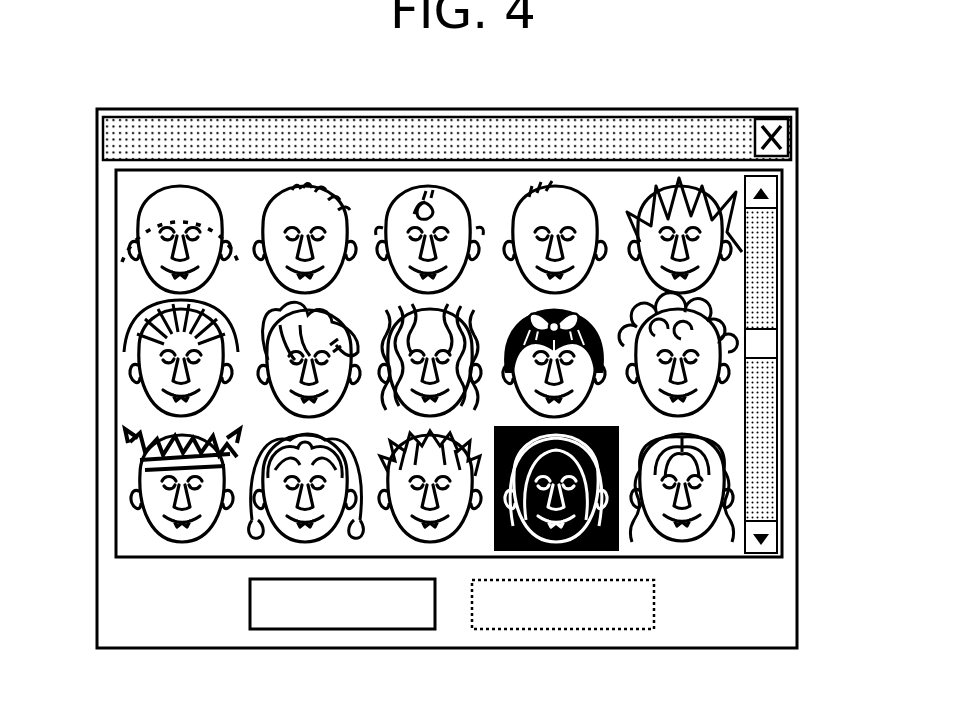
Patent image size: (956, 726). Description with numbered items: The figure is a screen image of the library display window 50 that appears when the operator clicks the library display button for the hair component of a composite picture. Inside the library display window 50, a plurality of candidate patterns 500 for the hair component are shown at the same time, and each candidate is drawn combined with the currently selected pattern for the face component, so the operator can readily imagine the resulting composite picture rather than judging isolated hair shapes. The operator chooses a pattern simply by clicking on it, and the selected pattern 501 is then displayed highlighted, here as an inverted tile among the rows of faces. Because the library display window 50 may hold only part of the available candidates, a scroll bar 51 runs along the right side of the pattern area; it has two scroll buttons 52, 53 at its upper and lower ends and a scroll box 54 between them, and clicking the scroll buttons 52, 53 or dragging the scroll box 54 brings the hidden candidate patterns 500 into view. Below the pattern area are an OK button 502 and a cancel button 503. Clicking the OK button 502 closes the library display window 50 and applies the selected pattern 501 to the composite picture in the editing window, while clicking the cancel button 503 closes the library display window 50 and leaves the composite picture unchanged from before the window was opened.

The library display window 50 is at (103, 440).
The candidate patterns 500 is at (372, 200).
The selected pattern 501 is at (504, 521).
The OK button 502 is at (277, 621).
The cancel button 503 is at (614, 629).
The scroll bar 51 is at (765, 298).
The scroll button 52 is at (775, 201).
The scroll button 53 is at (770, 541).
The scroll box 54 is at (763, 350).